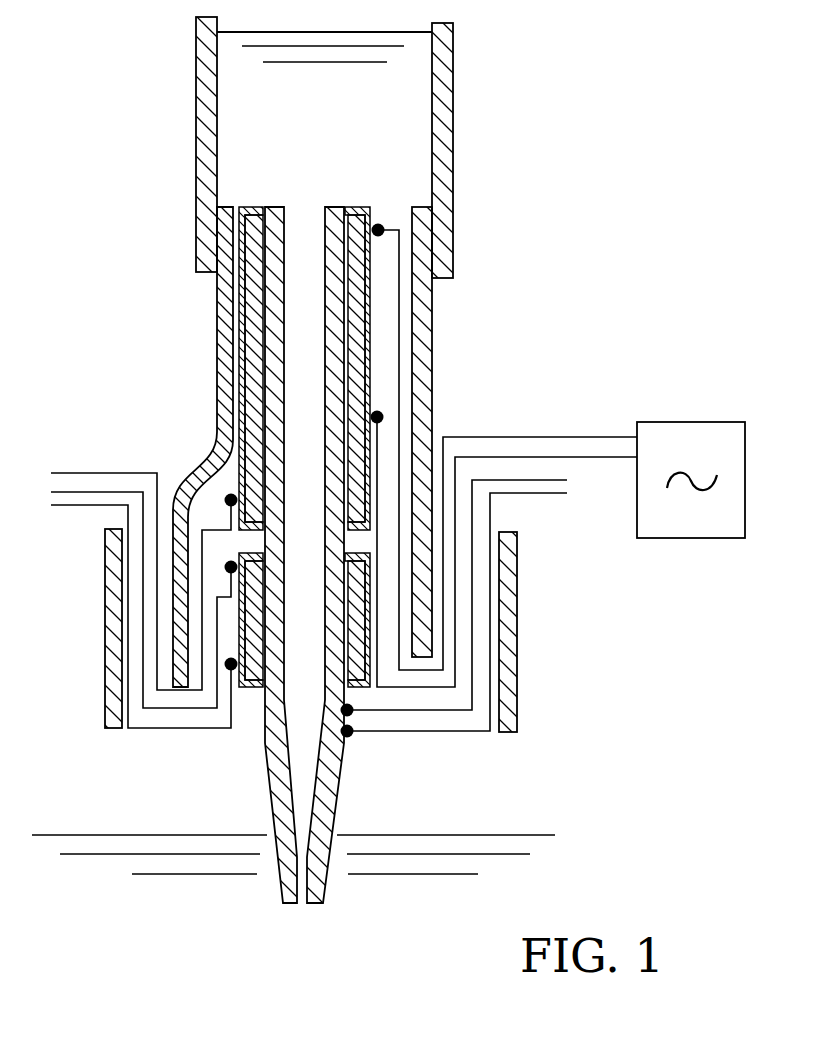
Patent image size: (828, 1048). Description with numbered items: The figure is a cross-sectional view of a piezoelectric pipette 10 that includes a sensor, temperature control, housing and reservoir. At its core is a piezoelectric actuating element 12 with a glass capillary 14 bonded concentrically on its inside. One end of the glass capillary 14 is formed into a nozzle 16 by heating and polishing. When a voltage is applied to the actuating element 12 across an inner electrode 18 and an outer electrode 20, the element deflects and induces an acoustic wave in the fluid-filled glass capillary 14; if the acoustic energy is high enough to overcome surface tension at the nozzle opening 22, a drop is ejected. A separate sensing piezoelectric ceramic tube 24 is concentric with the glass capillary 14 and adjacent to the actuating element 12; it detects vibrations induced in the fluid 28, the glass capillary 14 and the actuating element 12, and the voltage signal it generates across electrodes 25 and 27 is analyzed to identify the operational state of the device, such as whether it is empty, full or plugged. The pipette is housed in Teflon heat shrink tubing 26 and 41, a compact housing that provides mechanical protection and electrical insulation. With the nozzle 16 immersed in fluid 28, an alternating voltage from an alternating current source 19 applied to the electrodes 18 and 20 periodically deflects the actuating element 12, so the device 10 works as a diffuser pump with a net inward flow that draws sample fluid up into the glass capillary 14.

The piezoelectric pipette 10 is at (603, 188).
The piezoelectric actuating element 12 is at (362, 343).
The glass capillary 14 is at (267, 753).
The nozzle 16 is at (292, 932).
The inner electrode 18 is at (368, 208).
The alternating current source 19 is at (733, 422).
The outer electrode 20 is at (233, 378).
The nozzle opening 22 is at (302, 905).
The sensing piezoelectric ceramic tube 24 is at (362, 600).
The sensor electrode 25 is at (245, 643).
The Teflon heat shrink tubing 26 is at (105, 678).
The sensor electrode 27 is at (238, 552).
The fluid 28 is at (310, 818).
The Teflon heat shrink tubing 41 is at (432, 391).